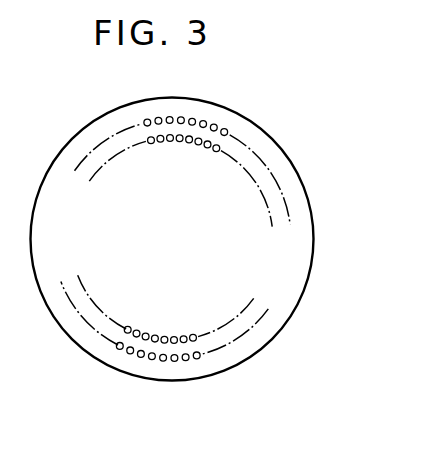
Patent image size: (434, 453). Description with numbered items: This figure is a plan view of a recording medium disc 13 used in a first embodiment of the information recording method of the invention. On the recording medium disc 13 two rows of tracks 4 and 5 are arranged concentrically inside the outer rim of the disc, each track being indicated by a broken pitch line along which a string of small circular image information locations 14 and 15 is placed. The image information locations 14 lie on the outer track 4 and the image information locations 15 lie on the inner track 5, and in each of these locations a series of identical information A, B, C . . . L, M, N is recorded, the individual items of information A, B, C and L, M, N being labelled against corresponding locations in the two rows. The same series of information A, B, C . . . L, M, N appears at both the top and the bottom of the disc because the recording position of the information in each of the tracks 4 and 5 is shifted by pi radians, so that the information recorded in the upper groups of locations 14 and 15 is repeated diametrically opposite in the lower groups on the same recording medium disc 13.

The recording medium disc 13 is at (276, 143).
The track 4 is at (77, 171).
The track 5 is at (104, 174).
The image information location 14 is at (230, 131).
The image information location 15 is at (216, 152).
The information A is at (175, 115).
The information B is at (186, 116).
The information C is at (198, 119).
The information L is at (167, 141).
The information M is at (178, 141).
The information N is at (189, 142).